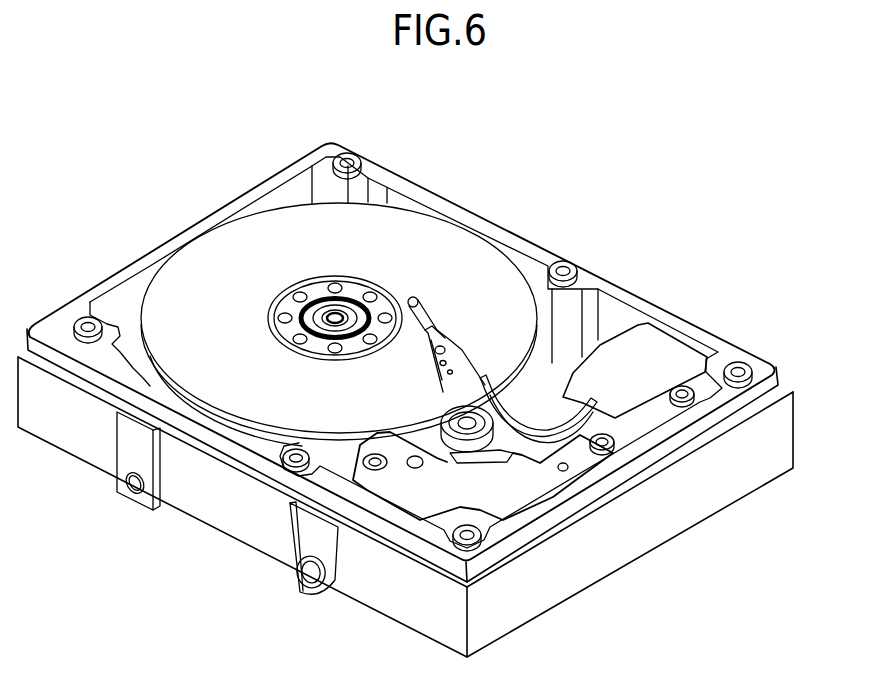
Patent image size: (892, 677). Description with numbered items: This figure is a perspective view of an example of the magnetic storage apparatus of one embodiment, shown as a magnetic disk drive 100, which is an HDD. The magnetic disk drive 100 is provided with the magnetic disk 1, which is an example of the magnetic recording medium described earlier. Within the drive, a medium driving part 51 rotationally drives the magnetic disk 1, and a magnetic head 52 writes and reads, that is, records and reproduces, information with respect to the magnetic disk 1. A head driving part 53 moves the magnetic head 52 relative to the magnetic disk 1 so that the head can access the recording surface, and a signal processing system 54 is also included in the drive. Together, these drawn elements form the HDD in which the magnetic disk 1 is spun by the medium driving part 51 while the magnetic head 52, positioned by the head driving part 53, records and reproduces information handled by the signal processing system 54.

The magnetic disk drive 100 is at (674, 126).
The magnetic disk 1 is at (395, 252).
The medium driving part 51 is at (285, 296).
The magnetic head 52 is at (414, 298).
The head driving part 53 is at (500, 470).
The signal processing system 54 is at (660, 368).